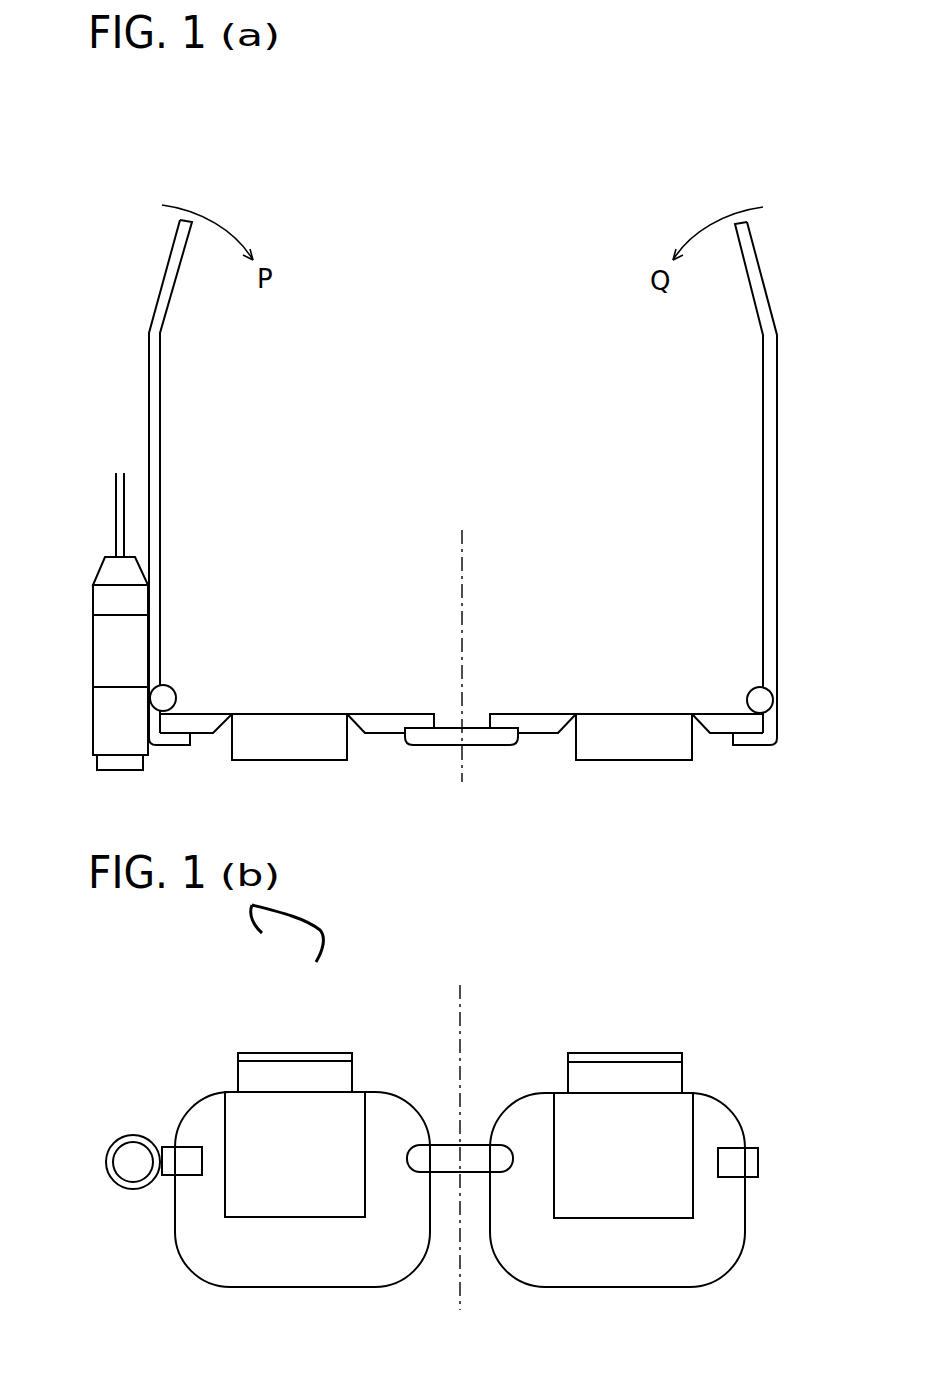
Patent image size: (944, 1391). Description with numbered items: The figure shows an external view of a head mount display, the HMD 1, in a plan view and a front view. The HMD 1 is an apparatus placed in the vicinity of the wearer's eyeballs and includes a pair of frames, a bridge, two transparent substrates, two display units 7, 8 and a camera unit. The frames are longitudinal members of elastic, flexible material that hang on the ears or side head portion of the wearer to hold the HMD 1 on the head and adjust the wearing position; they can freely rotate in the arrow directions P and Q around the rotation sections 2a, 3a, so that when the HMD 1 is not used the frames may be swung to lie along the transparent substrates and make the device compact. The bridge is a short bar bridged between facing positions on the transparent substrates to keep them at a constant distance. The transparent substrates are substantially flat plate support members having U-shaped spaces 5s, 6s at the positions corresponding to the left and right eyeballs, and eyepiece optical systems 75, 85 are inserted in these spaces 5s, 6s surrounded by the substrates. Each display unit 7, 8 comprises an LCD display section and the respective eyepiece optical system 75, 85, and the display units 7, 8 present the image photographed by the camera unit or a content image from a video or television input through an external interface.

The HMD 1 is at (450, 157).
The rotation section 2a is at (171, 686).
The rotation section 3a is at (751, 688).
The U-shaped space 5s is at (241, 1217).
The U-shaped space 6s is at (675, 1218).
The display unit 7 is at (238, 995).
The eyepiece optical system 75 is at (265, 1130).
The display unit 8 is at (573, 995).
The eyepiece optical system 85 is at (653, 1137).